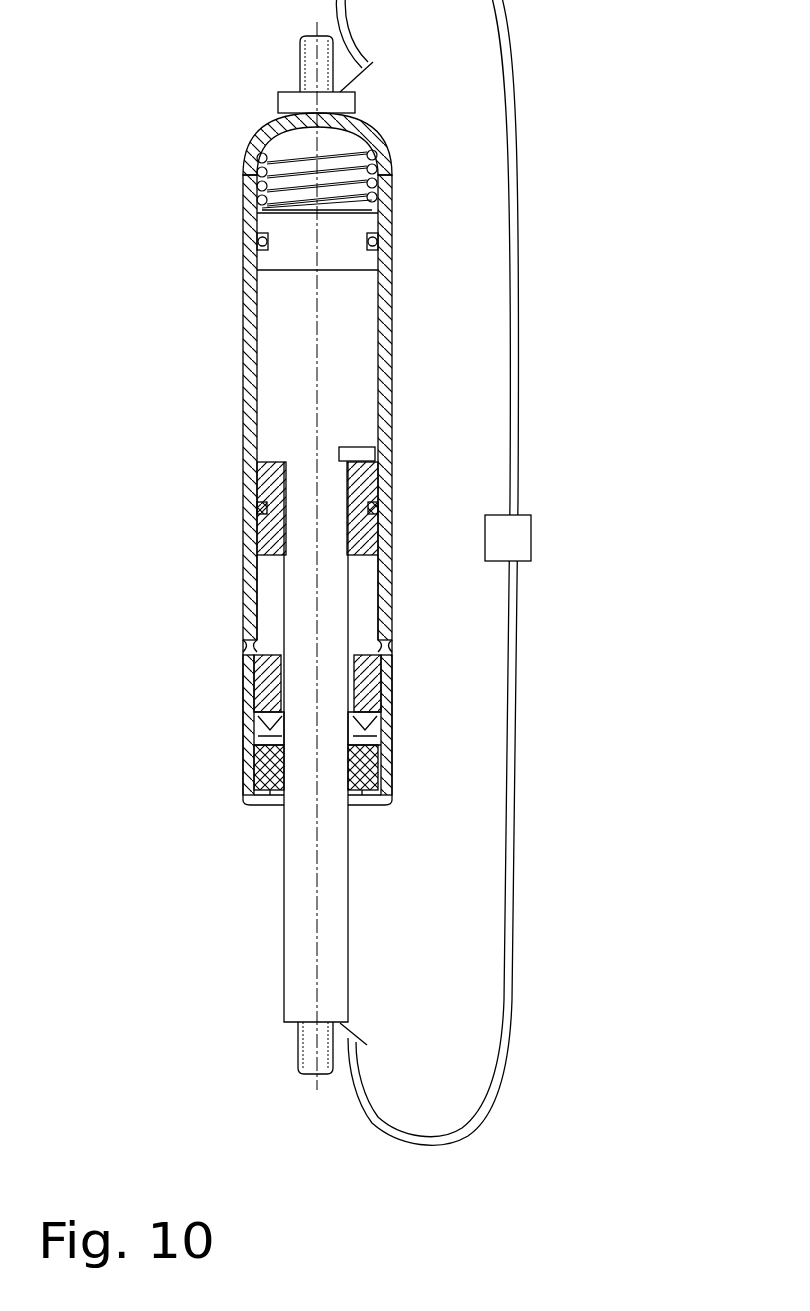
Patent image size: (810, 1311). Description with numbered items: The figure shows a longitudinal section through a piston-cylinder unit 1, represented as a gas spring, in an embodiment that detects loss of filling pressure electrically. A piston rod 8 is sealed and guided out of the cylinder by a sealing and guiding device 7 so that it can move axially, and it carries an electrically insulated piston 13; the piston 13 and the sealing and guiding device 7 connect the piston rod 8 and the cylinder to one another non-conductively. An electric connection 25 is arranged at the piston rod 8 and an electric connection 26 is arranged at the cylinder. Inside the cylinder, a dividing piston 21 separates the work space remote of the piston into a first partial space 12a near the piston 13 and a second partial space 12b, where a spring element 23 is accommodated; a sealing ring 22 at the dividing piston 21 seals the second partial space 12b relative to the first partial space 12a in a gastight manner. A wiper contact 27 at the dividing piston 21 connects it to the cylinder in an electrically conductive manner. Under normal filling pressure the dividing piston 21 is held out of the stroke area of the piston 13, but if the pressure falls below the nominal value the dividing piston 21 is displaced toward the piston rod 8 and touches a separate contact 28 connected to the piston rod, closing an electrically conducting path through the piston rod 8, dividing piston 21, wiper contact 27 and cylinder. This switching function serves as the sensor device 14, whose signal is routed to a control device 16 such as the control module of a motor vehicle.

The piston-cylinder unit 1 is at (582, 118).
The sealing and guiding device 7 is at (427, 727).
The piston rod 8 is at (332, 870).
The first partial space 12a is at (278, 293).
The second partial space 12b is at (285, 143).
The piston 13 is at (392, 547).
The sensor device 14 is at (407, 418).
The control device 16 is at (525, 530).
The dividing piston 21 is at (353, 258).
The sealing ring 22 is at (373, 243).
The spring element 23 is at (373, 182).
The electric connection 25 is at (365, 1045).
The electric connection 26 is at (363, 70).
The wiper contact 27 is at (255, 207).
The contact 28 is at (367, 452).